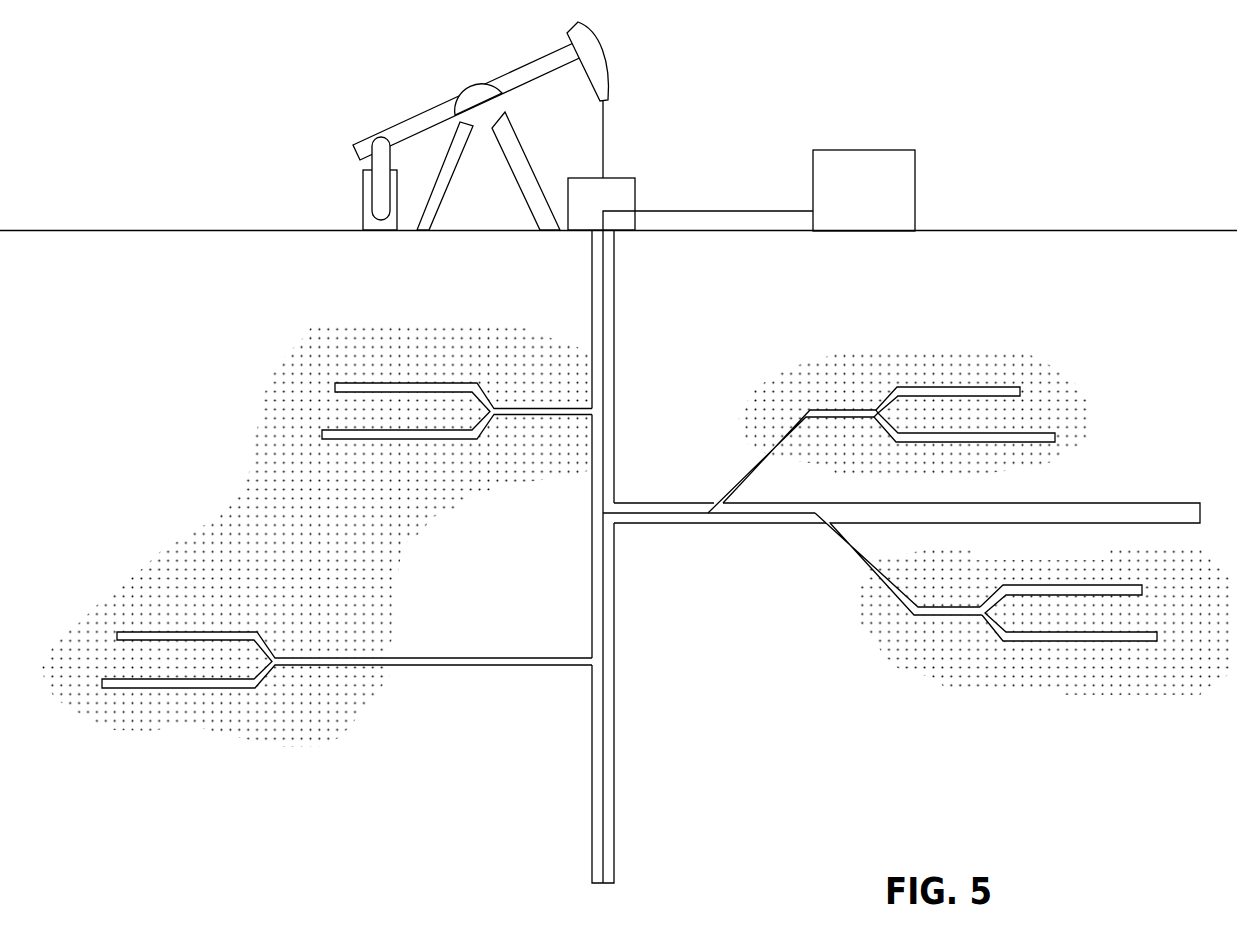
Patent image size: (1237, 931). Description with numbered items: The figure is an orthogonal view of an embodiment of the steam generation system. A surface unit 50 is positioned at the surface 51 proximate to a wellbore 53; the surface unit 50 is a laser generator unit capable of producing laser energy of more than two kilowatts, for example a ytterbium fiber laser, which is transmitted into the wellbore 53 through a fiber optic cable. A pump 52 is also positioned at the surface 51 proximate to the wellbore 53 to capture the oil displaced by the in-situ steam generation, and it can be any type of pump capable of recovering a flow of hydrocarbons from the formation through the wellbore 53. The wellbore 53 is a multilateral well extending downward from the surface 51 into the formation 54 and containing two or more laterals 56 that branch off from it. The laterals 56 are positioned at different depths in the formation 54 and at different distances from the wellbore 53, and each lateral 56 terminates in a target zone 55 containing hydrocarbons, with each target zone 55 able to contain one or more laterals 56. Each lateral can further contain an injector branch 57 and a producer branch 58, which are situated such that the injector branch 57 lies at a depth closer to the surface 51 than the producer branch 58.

The surface unit 50 is at (872, 150).
The surface 51 is at (188, 230).
The pump 52 is at (605, 60).
The wellbore 53 is at (615, 280).
The formation 54 is at (805, 310).
The target zone 55 is at (280, 460).
The lateral 56 is at (542, 407).
The injector branch 57 is at (980, 385).
The producer branch 58 is at (1040, 435).